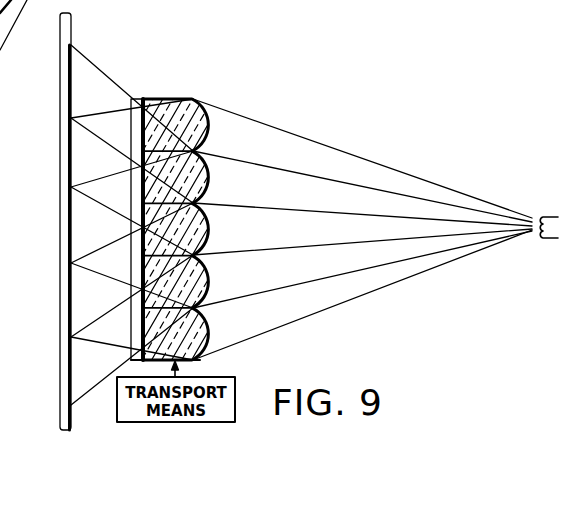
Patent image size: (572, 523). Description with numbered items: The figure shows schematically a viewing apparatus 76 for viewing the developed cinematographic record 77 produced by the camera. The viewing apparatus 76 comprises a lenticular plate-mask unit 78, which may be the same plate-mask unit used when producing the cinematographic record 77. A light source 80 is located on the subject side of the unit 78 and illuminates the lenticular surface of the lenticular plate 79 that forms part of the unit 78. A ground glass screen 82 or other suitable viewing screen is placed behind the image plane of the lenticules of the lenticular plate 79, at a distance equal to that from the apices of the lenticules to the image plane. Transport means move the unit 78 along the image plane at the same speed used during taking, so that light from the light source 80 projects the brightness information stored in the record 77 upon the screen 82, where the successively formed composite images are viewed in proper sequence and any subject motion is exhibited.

The viewing apparatus 76 is at (114, 71).
The cinematographic record 77 is at (133, 143).
The lenticular plate-mask unit 78 is at (184, 224).
The lenticular plate 79 is at (216, 130).
The light source 80 is at (553, 216).
The ground glass screen 82 is at (63, 175).